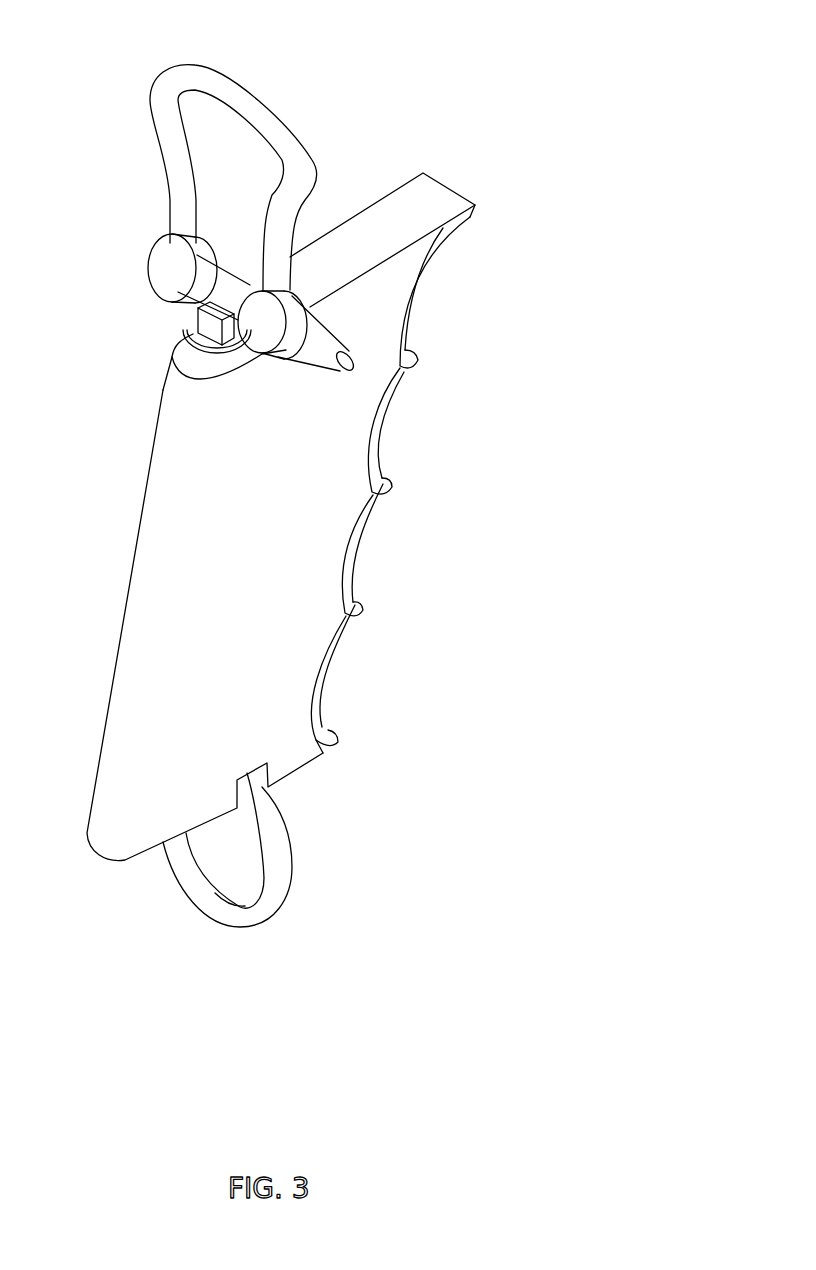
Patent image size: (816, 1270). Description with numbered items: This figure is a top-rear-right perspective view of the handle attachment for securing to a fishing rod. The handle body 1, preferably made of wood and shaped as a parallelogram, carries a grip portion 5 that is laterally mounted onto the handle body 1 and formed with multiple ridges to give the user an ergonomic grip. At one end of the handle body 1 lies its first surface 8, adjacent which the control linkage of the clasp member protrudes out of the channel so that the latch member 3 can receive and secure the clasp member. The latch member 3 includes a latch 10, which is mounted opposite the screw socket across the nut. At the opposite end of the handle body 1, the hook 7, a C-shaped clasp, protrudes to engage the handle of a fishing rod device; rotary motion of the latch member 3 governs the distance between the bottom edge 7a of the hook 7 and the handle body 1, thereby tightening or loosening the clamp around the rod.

The handle body 1 is at (157, 540).
The latch member 3 is at (285, 80).
The grip portion 5 is at (427, 580).
The hook 7 is at (273, 842).
The bottom edge 7a is at (242, 898).
The first surface 8 is at (353, 250).
The latch 10 is at (170, 247).